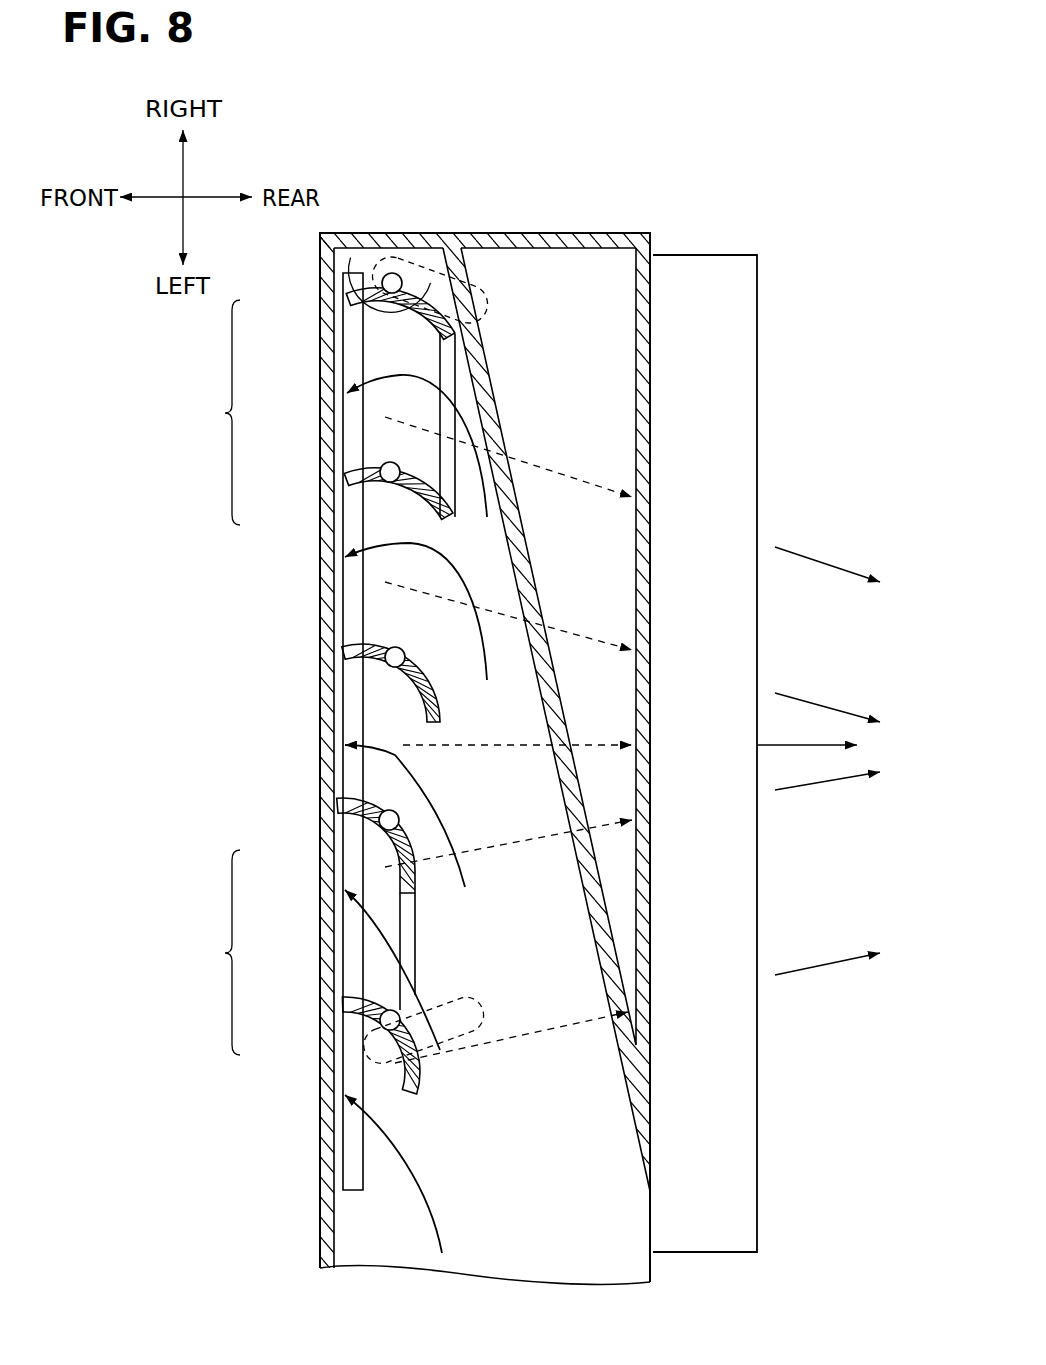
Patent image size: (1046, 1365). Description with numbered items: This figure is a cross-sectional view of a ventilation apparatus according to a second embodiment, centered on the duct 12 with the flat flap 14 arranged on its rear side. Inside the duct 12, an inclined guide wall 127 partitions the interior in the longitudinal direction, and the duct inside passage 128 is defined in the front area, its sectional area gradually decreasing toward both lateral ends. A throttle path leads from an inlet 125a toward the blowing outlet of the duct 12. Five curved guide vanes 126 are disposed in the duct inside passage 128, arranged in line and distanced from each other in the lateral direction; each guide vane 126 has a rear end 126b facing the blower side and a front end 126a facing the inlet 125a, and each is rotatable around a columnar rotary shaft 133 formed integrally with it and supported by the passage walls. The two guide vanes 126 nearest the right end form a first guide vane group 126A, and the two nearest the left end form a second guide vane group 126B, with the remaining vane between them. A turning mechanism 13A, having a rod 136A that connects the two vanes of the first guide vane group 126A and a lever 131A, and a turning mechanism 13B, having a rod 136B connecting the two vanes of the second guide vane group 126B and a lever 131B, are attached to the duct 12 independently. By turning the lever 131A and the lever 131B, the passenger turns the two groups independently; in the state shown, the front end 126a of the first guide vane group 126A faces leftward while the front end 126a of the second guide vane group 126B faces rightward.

The duct 12 is at (612, 232).
The flap 14 is at (721, 250).
The turning mechanism 13A is at (510, 283).
The turning mechanism 13B is at (490, 1023).
The inlet 125a is at (350, 1168).
The guide vane 126 is at (390, 294).
The first guide vane group 126A is at (196, 412).
The second guide vane group 126B is at (196, 952).
The front end 126a is at (350, 272).
The rear end 126b is at (460, 340).
The guide wall 127 is at (443, 273).
The duct inside passage 128 is at (578, 1186).
The lever 131A is at (485, 321).
The lever 131B is at (477, 1000).
The rotary shaft 133 is at (400, 276).
The rod 136A is at (457, 483).
The rod 136B is at (417, 943).